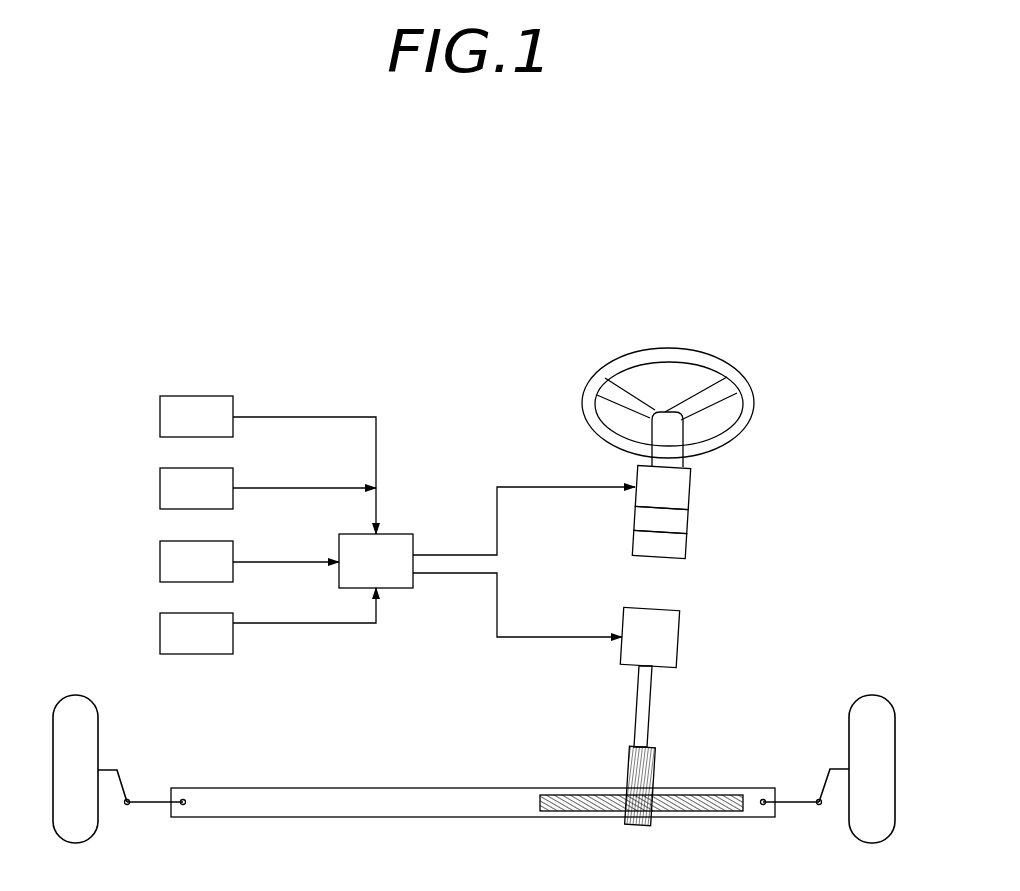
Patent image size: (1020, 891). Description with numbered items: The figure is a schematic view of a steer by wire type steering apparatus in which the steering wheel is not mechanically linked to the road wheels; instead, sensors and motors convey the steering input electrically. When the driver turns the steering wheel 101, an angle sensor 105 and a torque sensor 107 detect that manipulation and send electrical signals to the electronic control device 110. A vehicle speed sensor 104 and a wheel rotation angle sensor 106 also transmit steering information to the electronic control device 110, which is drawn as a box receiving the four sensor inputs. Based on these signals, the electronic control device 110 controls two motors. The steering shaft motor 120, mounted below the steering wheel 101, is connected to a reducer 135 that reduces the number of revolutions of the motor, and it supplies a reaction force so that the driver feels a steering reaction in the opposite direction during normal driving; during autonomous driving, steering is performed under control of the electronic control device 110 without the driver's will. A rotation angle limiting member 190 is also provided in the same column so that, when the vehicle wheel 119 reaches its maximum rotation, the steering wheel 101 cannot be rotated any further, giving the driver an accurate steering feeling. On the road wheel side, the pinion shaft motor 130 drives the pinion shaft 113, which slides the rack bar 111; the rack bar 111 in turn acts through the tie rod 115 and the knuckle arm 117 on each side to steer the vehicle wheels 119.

The steering wheel 101 is at (666, 355).
The vehicle speed sensor 104 is at (158, 413).
The angle sensor 105 is at (158, 485).
The wheel rotation angle sensor 106 is at (158, 557).
The torque sensor 107 is at (158, 630).
The electronic control device 110 is at (397, 533).
The rack bar 111 is at (387, 808).
The pinion shaft 113 is at (647, 763).
The tie rod 115 is at (140, 805).
The knuckle arm 117 is at (122, 782).
The vehicle wheel 119 is at (93, 723).
The steering shaft motor 120 is at (680, 488).
The pinion shaft motor 130 is at (670, 638).
The reducer 135 is at (677, 520).
The rotation angle limiting member 190 is at (677, 545).